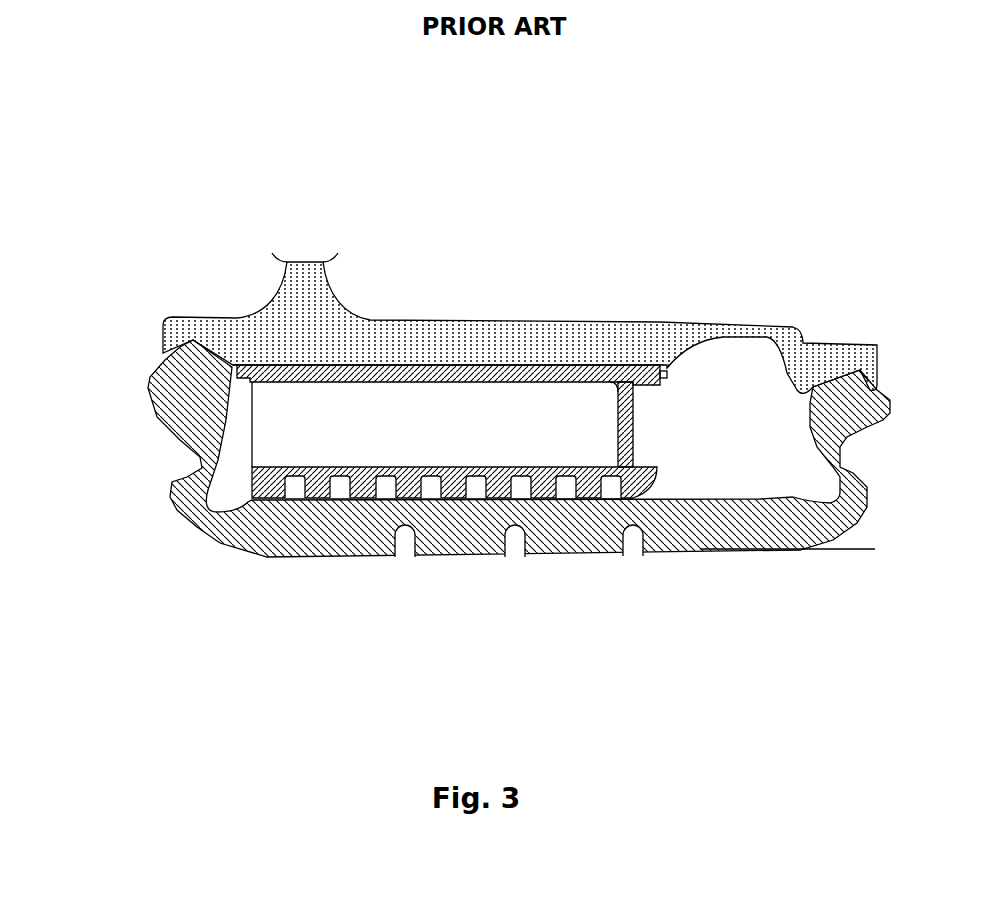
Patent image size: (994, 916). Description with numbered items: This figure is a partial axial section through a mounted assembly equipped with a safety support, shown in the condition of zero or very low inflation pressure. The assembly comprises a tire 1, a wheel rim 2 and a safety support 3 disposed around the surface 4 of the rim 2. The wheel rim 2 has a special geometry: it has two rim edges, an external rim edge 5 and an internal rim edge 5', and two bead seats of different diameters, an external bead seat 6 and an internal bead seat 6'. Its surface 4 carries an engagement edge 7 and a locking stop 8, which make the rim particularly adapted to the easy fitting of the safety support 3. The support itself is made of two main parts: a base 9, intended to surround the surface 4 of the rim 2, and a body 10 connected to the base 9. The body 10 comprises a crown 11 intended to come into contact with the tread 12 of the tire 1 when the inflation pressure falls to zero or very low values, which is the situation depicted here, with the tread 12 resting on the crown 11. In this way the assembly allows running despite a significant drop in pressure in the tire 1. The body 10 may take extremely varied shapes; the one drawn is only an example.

The tire 1 is at (278, 573).
The wheel rim 2 is at (701, 303).
The safety support 3 is at (352, 420).
The surface of the rim 4 is at (487, 365).
The external rim edge 5 is at (117, 333).
The internal rim edge 5' is at (878, 333).
The external bead seat 6 is at (195, 317).
The internal bead seat 6' is at (850, 314).
The engagement edge 7 is at (233, 365).
The locking stop 8 is at (667, 373).
The base 9 is at (565, 365).
The body 10 is at (618, 425).
The crown 11 is at (590, 470).
The tread 12 is at (690, 528).